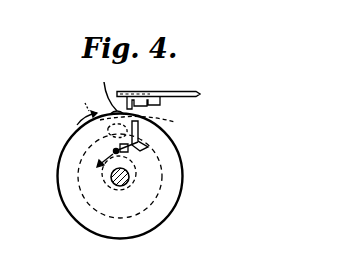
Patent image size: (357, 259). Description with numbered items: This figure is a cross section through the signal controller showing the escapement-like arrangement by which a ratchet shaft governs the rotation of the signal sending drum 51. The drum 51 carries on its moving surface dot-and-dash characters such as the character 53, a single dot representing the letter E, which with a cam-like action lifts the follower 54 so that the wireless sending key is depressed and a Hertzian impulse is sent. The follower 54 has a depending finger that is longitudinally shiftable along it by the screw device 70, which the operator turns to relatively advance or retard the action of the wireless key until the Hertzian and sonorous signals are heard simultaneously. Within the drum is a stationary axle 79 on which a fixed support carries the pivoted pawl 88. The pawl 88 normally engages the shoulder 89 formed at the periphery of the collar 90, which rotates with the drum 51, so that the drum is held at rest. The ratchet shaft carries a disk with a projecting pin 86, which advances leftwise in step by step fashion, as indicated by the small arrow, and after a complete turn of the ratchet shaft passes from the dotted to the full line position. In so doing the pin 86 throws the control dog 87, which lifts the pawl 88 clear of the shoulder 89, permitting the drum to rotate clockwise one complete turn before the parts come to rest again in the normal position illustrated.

The signal sending drum 51 is at (58, 189).
The character 53 is at (103, 89).
The follower 54 is at (138, 92).
The screw device 70 is at (158, 98).
The stationary axle 79 is at (112, 188).
The projecting pin 86 is at (114, 151).
The control dog 87 is at (146, 142).
The pawl 88 is at (140, 116).
The shoulder 89 is at (78, 107).
The collar 90 is at (163, 178).